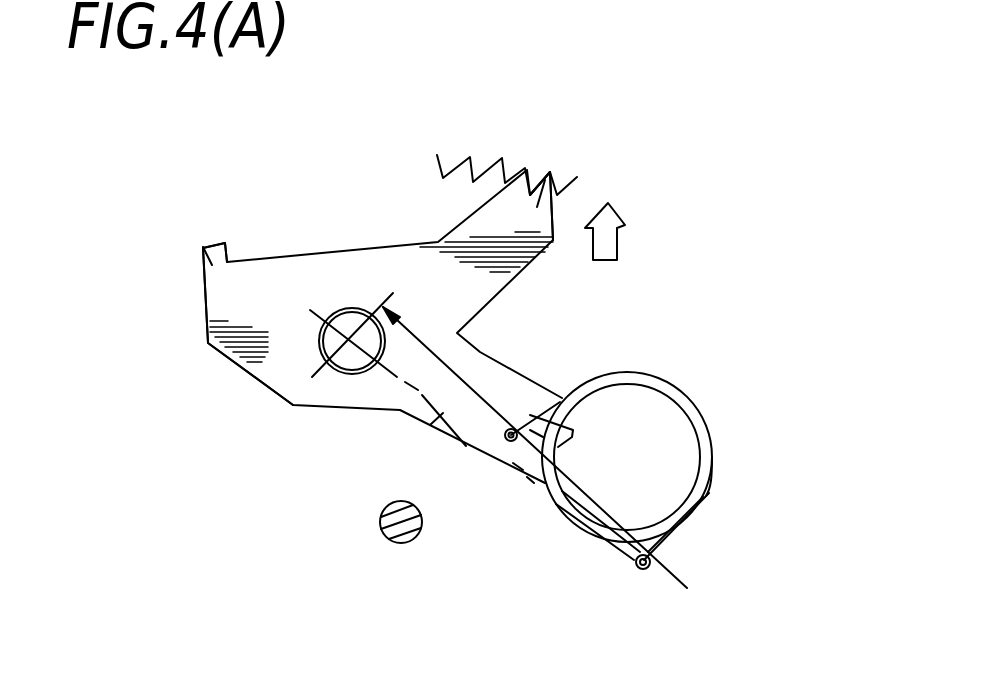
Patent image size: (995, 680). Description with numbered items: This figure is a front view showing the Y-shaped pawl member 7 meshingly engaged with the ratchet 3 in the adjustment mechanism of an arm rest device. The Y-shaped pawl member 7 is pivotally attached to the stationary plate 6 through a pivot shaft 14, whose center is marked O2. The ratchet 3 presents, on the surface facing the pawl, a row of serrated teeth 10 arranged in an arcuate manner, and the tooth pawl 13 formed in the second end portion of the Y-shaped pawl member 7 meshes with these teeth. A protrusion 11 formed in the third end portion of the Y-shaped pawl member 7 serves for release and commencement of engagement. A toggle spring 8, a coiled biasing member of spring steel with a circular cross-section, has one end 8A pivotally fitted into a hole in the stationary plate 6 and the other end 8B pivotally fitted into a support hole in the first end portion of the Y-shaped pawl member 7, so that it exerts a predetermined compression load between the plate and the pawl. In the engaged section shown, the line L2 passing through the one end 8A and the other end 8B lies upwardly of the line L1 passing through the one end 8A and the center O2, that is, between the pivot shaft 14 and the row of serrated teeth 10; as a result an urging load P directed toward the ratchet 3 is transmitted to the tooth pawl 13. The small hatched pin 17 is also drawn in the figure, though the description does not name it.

The ratchet 3 is at (455, 153).
The row of serrated teeth 10 is at (508, 173).
The tooth pawl 13 is at (553, 169).
The protrusion 11 is at (205, 248).
The pivot shaft 14 is at (345, 318).
The Y-shaped pawl member 7 is at (208, 343).
The center of the pivot shaft O2 is at (352, 355).
The line L1 is at (436, 419).
The line L2 is at (460, 383).
The urging load P is at (607, 246).
The stationary plate 6 is at (682, 370).
The toggle spring 8 is at (712, 433).
The other end of the toggle spring 8B is at (510, 443).
The one end of the toggle spring 8A is at (648, 572).
The stopper pin 17 is at (397, 543).